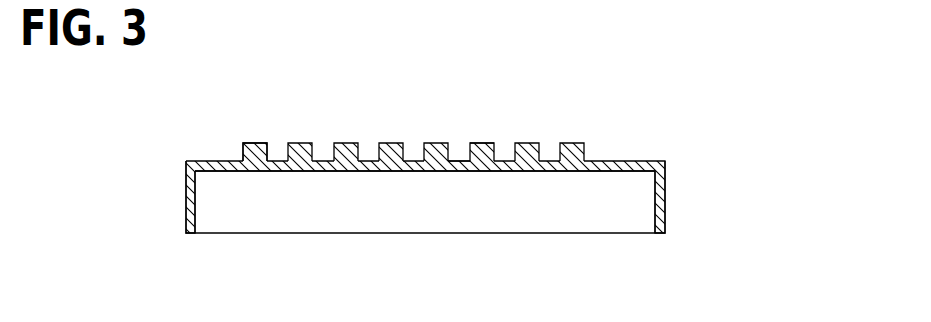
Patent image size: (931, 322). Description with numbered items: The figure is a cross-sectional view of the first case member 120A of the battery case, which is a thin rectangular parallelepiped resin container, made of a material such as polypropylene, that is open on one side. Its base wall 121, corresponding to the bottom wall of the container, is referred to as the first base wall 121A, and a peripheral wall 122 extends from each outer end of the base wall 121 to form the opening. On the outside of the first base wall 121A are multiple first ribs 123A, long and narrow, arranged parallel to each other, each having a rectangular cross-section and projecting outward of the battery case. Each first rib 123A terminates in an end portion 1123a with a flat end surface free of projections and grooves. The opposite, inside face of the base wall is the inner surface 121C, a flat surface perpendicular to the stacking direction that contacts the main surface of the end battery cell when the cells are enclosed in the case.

The first case member 120A is at (212, 152).
The base wall 121 is at (225, 161).
The first base wall 121A is at (225, 161).
The first ribs 123A is at (462, 152).
The end portion of the first rib 1123a is at (482, 143).
The inner surface 121C is at (320, 172).
The peripheral wall 122 is at (186, 203).